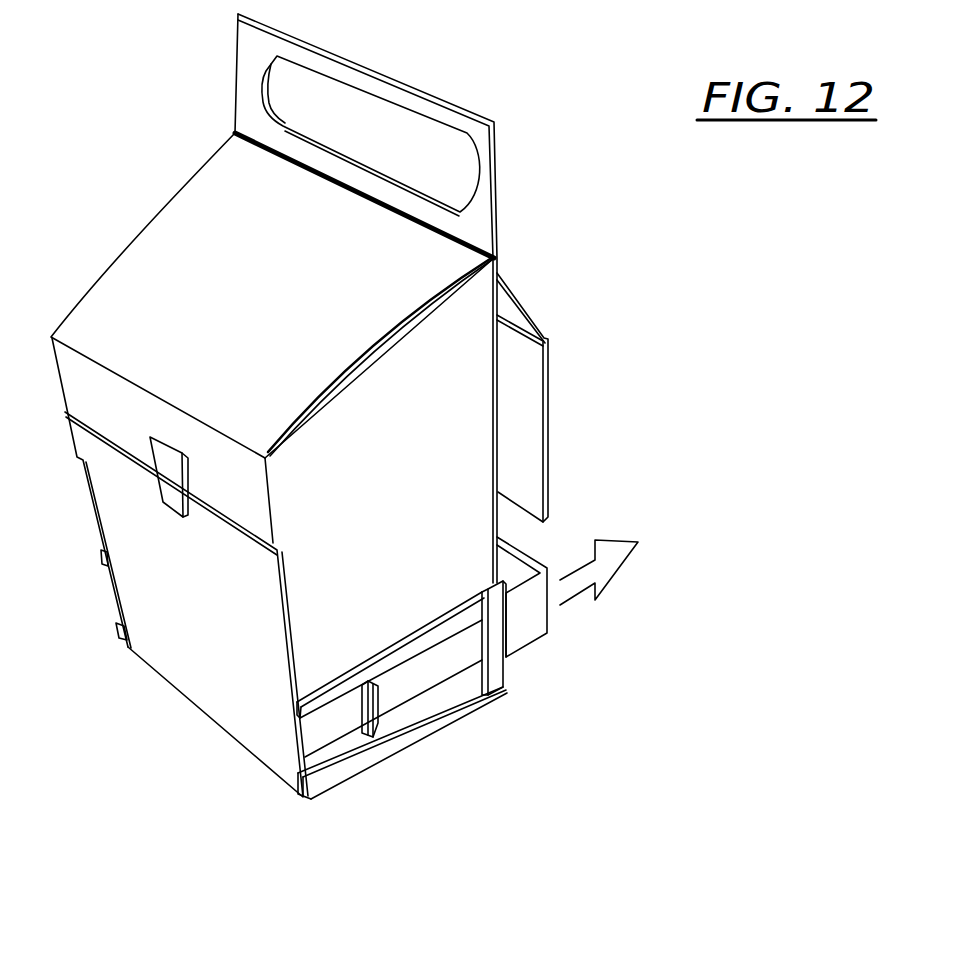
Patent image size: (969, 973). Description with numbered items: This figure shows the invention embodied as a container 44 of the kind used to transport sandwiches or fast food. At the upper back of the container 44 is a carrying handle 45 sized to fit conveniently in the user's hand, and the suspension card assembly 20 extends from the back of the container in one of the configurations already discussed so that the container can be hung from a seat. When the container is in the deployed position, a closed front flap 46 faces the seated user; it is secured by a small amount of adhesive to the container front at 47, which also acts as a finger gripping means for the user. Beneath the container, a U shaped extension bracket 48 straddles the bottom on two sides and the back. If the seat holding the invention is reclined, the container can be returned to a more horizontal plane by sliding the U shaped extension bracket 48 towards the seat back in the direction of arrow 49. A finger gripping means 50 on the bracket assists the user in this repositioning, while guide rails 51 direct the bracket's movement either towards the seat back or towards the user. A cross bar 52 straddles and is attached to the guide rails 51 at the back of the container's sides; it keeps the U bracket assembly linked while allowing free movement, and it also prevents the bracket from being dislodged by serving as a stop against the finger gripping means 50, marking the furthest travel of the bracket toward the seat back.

The suspension card assembly 20 is at (530, 417).
The container 44 is at (273, 323).
The carrying handle 45 is at (362, 117).
The front flap 46 is at (200, 565).
The adhesive securing point / finger gripping means 47 is at (173, 473).
The U shaped extension bracket 48 is at (526, 632).
The arrow 49 is at (625, 560).
The finger gripping means 50 is at (377, 705).
The guide rails 51 is at (308, 700).
The cross bar 52 is at (490, 650).